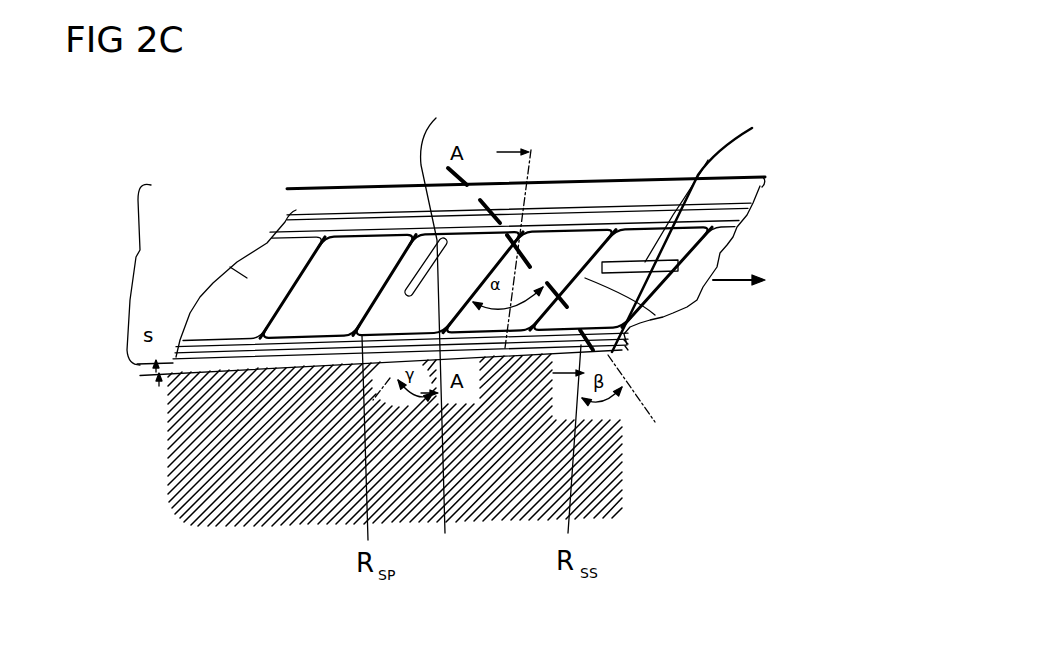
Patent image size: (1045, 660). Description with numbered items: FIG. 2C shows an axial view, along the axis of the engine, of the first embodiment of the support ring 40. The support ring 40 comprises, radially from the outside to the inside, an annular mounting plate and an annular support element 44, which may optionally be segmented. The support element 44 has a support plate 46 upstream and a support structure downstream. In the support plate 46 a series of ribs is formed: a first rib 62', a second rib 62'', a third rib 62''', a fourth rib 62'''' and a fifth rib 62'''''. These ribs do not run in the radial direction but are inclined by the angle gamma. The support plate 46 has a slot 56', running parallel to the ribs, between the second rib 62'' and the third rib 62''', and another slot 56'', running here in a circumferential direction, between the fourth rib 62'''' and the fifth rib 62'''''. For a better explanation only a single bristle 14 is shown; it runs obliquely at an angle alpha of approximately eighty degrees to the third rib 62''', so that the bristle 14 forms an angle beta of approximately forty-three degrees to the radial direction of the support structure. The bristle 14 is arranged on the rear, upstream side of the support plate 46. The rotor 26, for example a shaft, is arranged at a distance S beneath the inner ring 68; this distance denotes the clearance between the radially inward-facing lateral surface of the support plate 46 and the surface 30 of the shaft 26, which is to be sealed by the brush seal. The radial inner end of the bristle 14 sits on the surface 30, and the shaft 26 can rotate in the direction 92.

The bristle 14 is at (537, 190).
The rotor 26 is at (176, 430).
The surface 30 is at (628, 350).
The support ring 40 is at (659, 148).
The support element 44 is at (124, 274).
The support plate 46 is at (230, 267).
The slot 56' is at (507, 310).
The slot 56'' is at (707, 254).
The first rib 62' is at (340, 286).
The second rib 62'' is at (440, 283).
The third rib 62''' is at (546, 257).
The fourth rib 62'''' is at (670, 278).
The fifth rib 62''''' is at (670, 310).
The inner ring 68 is at (628, 344).
The direction 92 is at (758, 291).